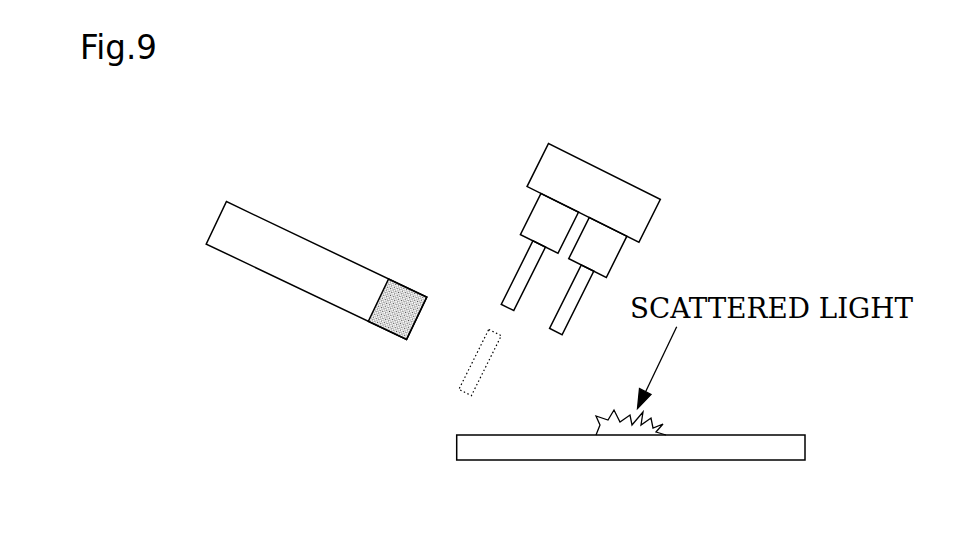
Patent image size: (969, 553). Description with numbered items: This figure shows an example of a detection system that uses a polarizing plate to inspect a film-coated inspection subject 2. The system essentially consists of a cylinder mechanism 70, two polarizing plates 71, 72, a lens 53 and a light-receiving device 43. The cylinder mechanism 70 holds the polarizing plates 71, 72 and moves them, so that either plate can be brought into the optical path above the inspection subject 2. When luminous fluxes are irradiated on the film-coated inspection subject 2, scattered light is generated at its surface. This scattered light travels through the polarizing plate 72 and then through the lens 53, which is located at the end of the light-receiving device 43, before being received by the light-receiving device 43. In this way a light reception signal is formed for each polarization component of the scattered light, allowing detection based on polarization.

The light-receiving device 43 is at (230, 245).
The lens 53 is at (378, 323).
The cylinder mechanism 70 is at (625, 187).
The polarizing plate 71 is at (562, 322).
The polarizing plate 72 is at (508, 300).
The film-coated inspection subject 2 is at (748, 452).